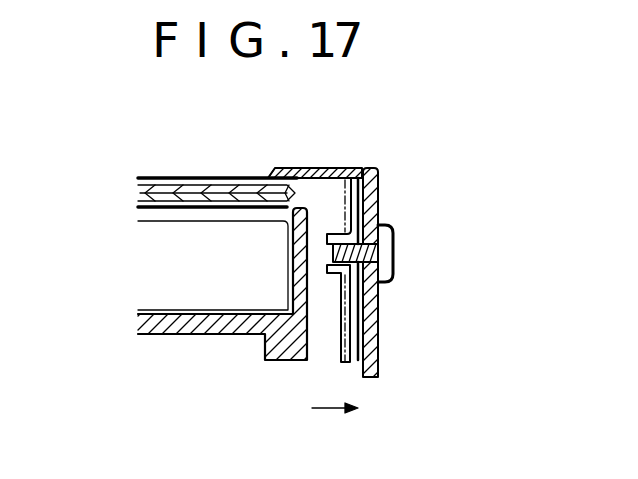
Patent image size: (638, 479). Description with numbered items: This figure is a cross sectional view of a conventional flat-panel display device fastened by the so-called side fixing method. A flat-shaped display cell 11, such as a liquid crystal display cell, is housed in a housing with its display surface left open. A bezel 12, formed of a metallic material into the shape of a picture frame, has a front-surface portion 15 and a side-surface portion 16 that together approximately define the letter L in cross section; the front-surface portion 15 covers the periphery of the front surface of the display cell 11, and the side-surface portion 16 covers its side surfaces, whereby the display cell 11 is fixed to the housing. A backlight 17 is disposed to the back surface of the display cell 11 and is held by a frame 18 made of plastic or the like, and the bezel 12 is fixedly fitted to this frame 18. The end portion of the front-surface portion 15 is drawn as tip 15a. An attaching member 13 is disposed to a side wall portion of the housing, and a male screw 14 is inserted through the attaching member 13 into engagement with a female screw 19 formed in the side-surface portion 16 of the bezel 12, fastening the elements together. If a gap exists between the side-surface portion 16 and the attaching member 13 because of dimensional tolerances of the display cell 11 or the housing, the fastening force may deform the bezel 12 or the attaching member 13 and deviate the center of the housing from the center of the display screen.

The display cell 11 is at (168, 178).
The bezel 12 is at (353, 166).
The attaching member 13 is at (378, 323).
The male screw 14 is at (395, 247).
The front-surface portion 15 is at (313, 167).
The flange tip 15a is at (279, 170).
The side-surface portion 16 is at (363, 363).
The backlight 17 is at (185, 275).
The frame 18 is at (265, 340).
The female screw 19 is at (330, 270).